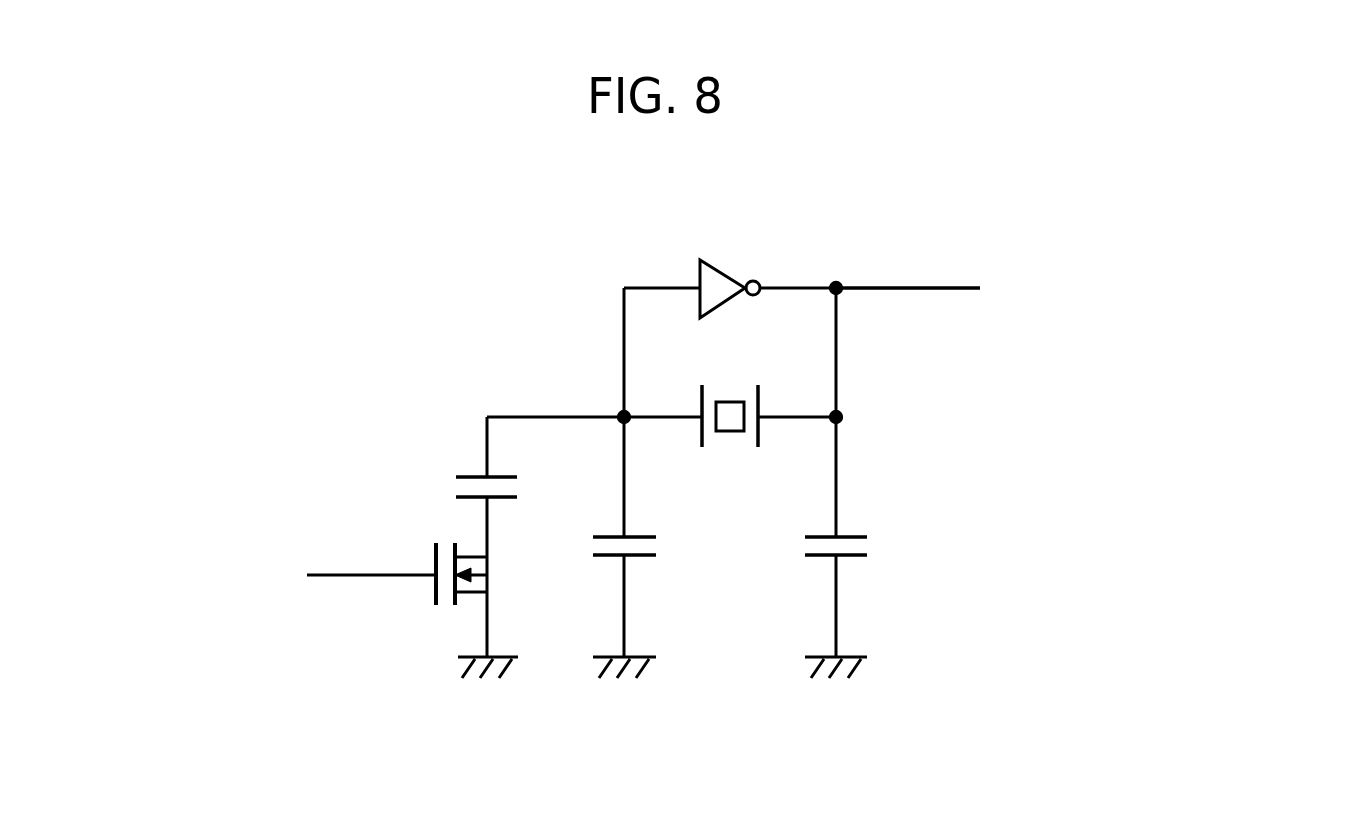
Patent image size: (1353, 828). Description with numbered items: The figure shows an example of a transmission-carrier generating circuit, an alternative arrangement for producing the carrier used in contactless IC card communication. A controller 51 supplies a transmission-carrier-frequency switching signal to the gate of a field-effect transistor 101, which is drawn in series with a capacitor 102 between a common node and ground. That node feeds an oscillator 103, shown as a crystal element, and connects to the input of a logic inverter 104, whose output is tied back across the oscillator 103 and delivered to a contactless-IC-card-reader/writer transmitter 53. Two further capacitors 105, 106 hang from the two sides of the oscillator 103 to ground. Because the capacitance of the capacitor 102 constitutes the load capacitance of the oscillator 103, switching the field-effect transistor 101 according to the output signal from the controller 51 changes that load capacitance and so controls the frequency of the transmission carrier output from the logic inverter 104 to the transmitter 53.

The controller 51 is at (249, 576).
The contactless-IC-card-reader/writer transmitter 53 is at (1084, 287).
The field-effect transistor 101 is at (435, 560).
The capacitor 102 is at (470, 473).
The oscillator 103 is at (730, 431).
The logic inverter 104 is at (725, 270).
The capacitor 105 is at (637, 557).
The capacitor 106 is at (848, 557).